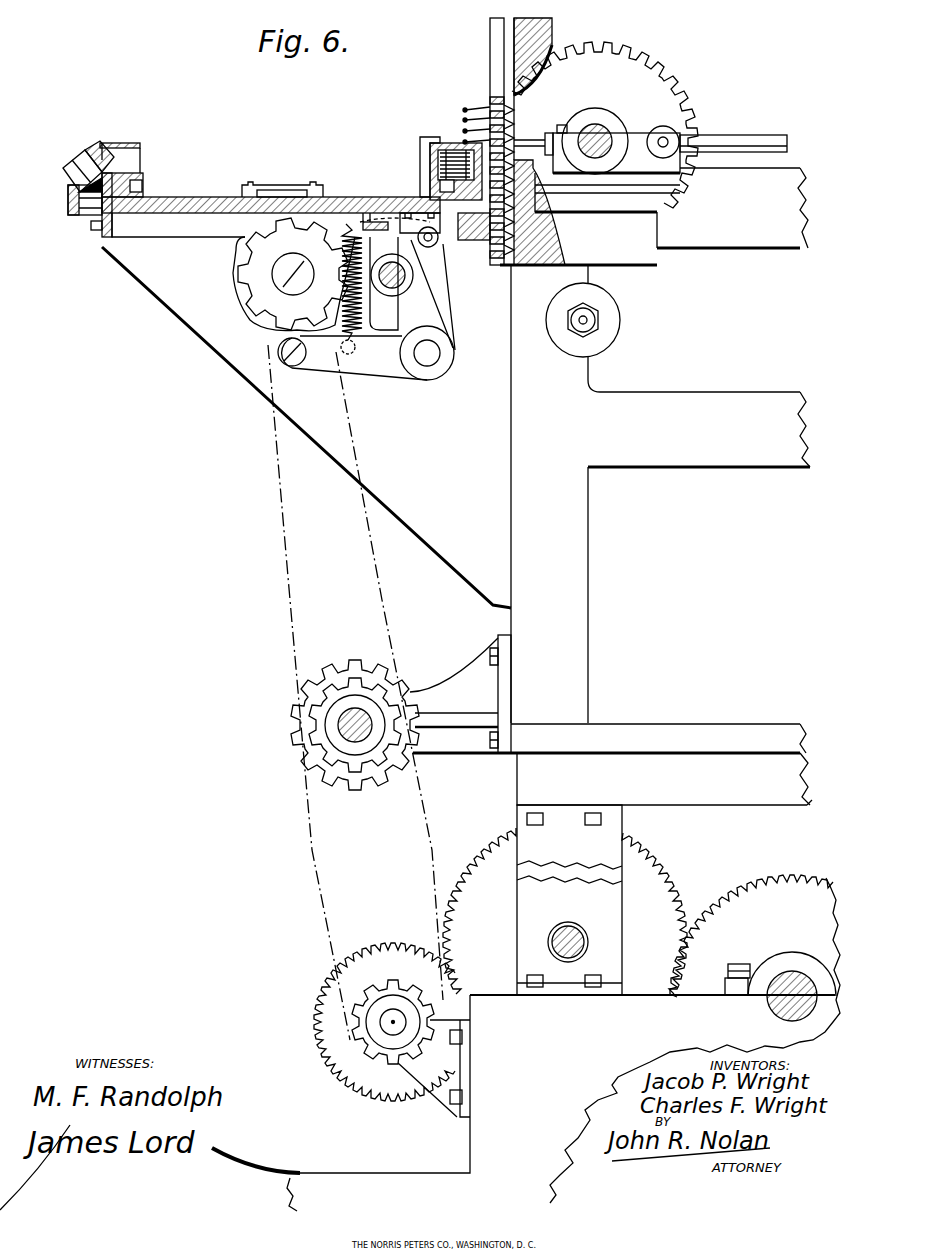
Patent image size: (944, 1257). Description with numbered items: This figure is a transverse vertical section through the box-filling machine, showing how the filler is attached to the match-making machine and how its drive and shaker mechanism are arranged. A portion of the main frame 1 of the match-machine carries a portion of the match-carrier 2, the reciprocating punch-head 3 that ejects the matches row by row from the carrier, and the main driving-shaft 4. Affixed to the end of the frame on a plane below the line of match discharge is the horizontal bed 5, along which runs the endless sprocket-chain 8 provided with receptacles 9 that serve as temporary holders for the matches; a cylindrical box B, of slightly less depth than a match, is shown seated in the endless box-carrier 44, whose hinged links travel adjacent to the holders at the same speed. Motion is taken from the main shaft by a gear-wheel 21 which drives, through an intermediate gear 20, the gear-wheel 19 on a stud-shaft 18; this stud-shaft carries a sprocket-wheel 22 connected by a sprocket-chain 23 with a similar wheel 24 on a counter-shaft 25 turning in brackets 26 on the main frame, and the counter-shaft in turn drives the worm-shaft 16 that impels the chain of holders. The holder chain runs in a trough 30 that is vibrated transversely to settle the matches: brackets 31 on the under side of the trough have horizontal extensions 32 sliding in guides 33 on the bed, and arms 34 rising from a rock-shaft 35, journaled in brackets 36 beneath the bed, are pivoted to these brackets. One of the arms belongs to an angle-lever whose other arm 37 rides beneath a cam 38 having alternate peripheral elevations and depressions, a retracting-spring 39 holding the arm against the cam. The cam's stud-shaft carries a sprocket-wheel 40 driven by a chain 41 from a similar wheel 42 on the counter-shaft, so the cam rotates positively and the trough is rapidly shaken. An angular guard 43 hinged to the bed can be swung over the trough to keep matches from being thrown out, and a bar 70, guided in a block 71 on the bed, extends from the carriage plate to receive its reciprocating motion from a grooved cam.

The main frame 1 is at (742, 406).
The match-carrier 2 is at (490, 104).
The reciprocating punch-head 3 is at (549, 137).
The main driving-shaft 4 is at (770, 1004).
The horizontal bed 5 is at (198, 192).
The endless sprocket-chain 8 is at (143, 176).
The receptacles 9 is at (125, 148).
The horizontal shaft 16 is at (398, 282).
The stud-shaft 18 is at (386, 1022).
The gear-wheel 19 is at (330, 980).
The intermediate gear 20 is at (480, 868).
The gear-wheel 21 is at (760, 885).
The sprocket-wheel 22 is at (355, 1035).
The sprocket-chain 23 is at (322, 881).
The sprocket-wheel 24 is at (356, 789).
The counter-shaft 25 is at (350, 733).
The brackets 26 is at (432, 683).
The trough 30 is at (447, 161).
The brackets 31 is at (440, 243).
The horizontal extensions 32 is at (392, 228).
The guides 33 is at (375, 228).
The arms 34 is at (444, 321).
The roller 35 is at (441, 363).
The brackets 36 is at (460, 304).
The lever-arm 37 is at (385, 369).
The cam 38 is at (238, 285).
The retracting-spring 39 is at (277, 279).
The sprocket-wheel 40 is at (265, 247).
The chain 41 is at (272, 456).
The sprocket-wheel 42 is at (322, 710).
The angular guard 43 is at (424, 150).
The box-carrier 44 is at (68, 201).
The bar 70 is at (283, 190).
The block 71 is at (243, 186).
The boxes B is at (62, 163).